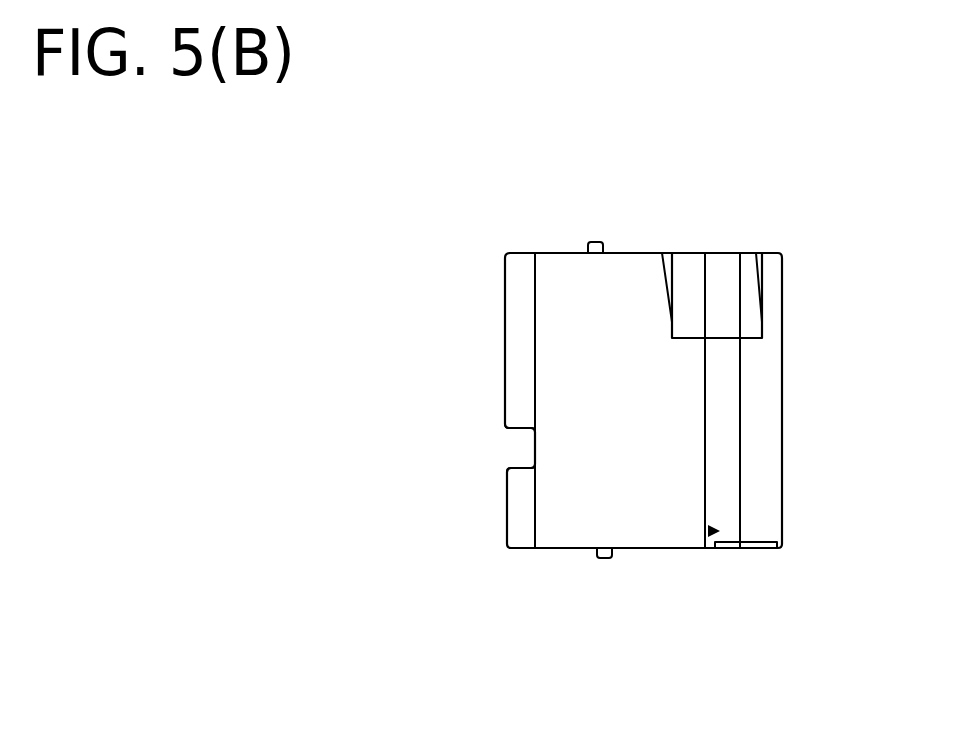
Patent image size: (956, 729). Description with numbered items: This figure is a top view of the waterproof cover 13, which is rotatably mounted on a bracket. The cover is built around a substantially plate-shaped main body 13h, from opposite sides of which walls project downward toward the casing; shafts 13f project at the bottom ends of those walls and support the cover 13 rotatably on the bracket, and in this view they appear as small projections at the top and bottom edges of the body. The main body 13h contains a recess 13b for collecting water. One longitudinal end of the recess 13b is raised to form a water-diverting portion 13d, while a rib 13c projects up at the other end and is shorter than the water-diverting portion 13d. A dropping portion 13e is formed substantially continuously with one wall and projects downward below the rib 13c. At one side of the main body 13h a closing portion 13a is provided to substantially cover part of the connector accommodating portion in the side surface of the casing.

The waterproof cover 13 is at (472, 280).
The closing portion 13a is at (513, 349).
The recess 13b is at (720, 485).
The rib 13c is at (735, 548).
The water-diverting portion 13d is at (718, 298).
The dropping portion 13e is at (752, 548).
The shafts 13f is at (596, 242).
The main body 13h is at (568, 422).